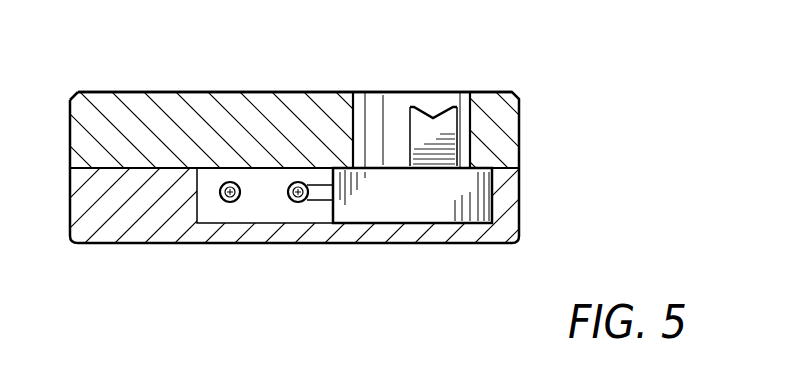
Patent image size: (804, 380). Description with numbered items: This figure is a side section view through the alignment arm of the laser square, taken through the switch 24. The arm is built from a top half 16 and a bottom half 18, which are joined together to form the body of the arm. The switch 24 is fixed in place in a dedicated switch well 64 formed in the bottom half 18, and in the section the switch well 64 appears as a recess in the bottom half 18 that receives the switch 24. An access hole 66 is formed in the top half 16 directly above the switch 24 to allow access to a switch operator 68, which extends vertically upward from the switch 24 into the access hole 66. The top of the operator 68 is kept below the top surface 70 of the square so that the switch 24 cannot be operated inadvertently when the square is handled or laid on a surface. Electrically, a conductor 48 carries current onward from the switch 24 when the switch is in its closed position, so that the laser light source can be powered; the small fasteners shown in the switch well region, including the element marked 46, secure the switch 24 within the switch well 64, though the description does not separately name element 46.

The top half 16 is at (500, 125).
The bottom half 18 is at (122, 232).
The switch 24 is at (415, 205).
The screw with pin 46 is at (298, 182).
The conductor 48 is at (230, 182).
The switch well 64 is at (247, 219).
The access hole 66 is at (355, 128).
The switch operator 68 is at (437, 128).
The top surface 70 is at (128, 92).